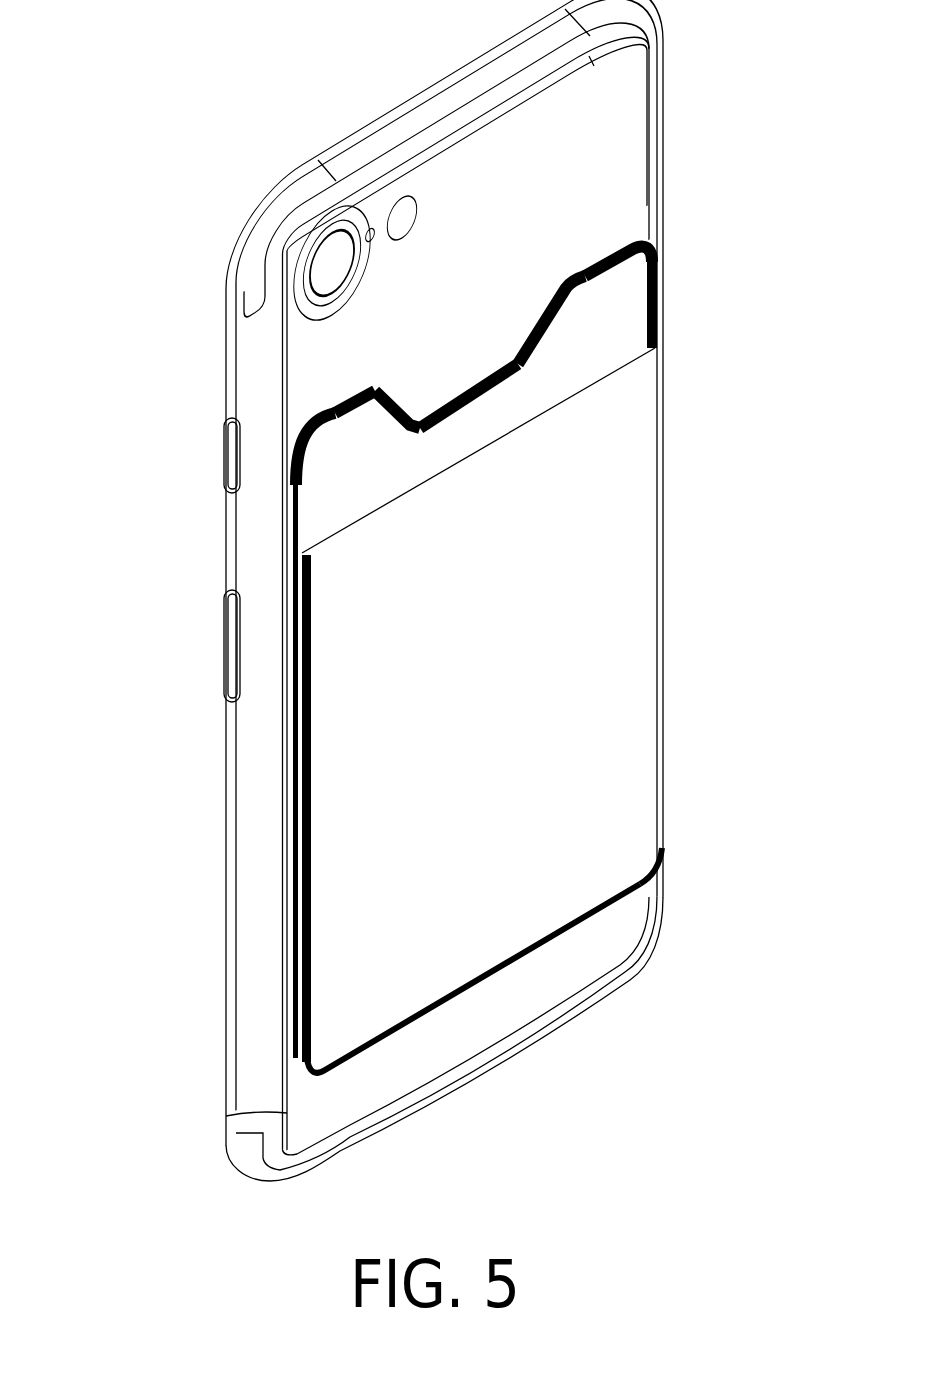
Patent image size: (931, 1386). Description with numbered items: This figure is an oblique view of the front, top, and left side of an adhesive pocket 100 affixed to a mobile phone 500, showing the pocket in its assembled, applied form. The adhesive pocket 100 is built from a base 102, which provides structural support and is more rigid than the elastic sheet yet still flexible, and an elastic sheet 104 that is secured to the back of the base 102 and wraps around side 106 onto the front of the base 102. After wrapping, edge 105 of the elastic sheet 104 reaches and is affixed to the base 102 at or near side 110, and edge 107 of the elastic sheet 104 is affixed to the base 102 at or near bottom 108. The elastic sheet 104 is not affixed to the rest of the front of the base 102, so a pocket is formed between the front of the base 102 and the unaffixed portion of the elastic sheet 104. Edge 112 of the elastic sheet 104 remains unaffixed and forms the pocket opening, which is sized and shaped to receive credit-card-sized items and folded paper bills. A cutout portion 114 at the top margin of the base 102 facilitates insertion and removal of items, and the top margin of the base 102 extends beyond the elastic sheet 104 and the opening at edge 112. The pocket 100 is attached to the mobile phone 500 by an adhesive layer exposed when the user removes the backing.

The mobile phone 500 is at (615, 190).
The base 102 is at (600, 335).
The adhesive pocket 100 is at (583, 640).
The elastic sheet 104 is at (573, 518).
The edge 105 is at (292, 805).
The side 106 is at (665, 746).
The edge 107 is at (423, 1017).
The bottom 108 is at (545, 938).
The side 110 is at (290, 540).
The edge 112 is at (395, 472).
The cutout portion 114 is at (450, 383).